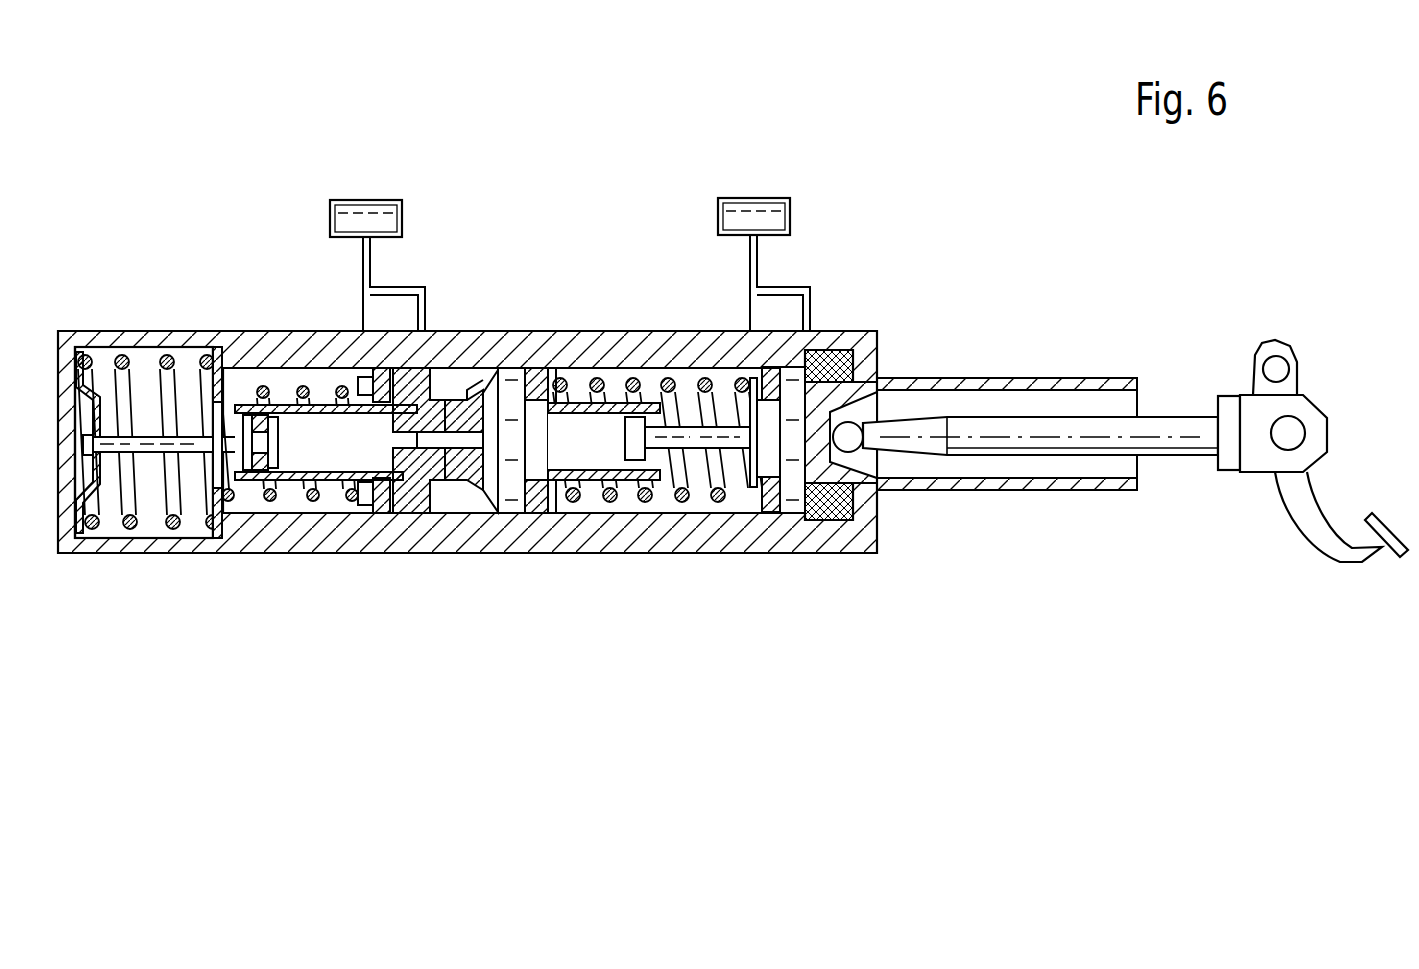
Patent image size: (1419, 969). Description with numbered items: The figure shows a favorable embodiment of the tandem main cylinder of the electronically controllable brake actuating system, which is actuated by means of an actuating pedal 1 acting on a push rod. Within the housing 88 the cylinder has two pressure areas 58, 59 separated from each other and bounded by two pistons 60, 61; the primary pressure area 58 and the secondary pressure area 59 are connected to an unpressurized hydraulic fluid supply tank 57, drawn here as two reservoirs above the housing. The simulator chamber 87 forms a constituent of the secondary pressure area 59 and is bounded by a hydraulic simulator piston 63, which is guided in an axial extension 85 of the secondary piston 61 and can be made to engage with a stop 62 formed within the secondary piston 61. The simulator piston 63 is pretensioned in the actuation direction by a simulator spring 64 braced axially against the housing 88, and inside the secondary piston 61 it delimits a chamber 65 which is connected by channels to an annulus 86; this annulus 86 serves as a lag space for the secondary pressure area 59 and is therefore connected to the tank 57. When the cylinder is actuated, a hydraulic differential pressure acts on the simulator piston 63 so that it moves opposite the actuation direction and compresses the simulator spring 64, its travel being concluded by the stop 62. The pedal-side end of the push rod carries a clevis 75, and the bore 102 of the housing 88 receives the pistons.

The actuating pedal 1 is at (1387, 560).
The unpressurized tank 57 is at (718, 210).
The first pressure area 58 is at (698, 485).
The second pressure area 59 is at (296, 493).
The piston 60 is at (772, 485).
The secondary piston 61 is at (460, 467).
The stop 62 is at (403, 455).
The simulator piston 63 is at (253, 478).
The simulator spring 64 is at (175, 365).
The chamber 65 is at (338, 453).
The clevis 75 is at (1229, 463).
The axial extension 85 is at (291, 385).
The annulus 86 is at (455, 390).
The simulator chamber 87 is at (150, 500).
The housing 88 is at (258, 340).
The cylinder bore 102 is at (542, 345).